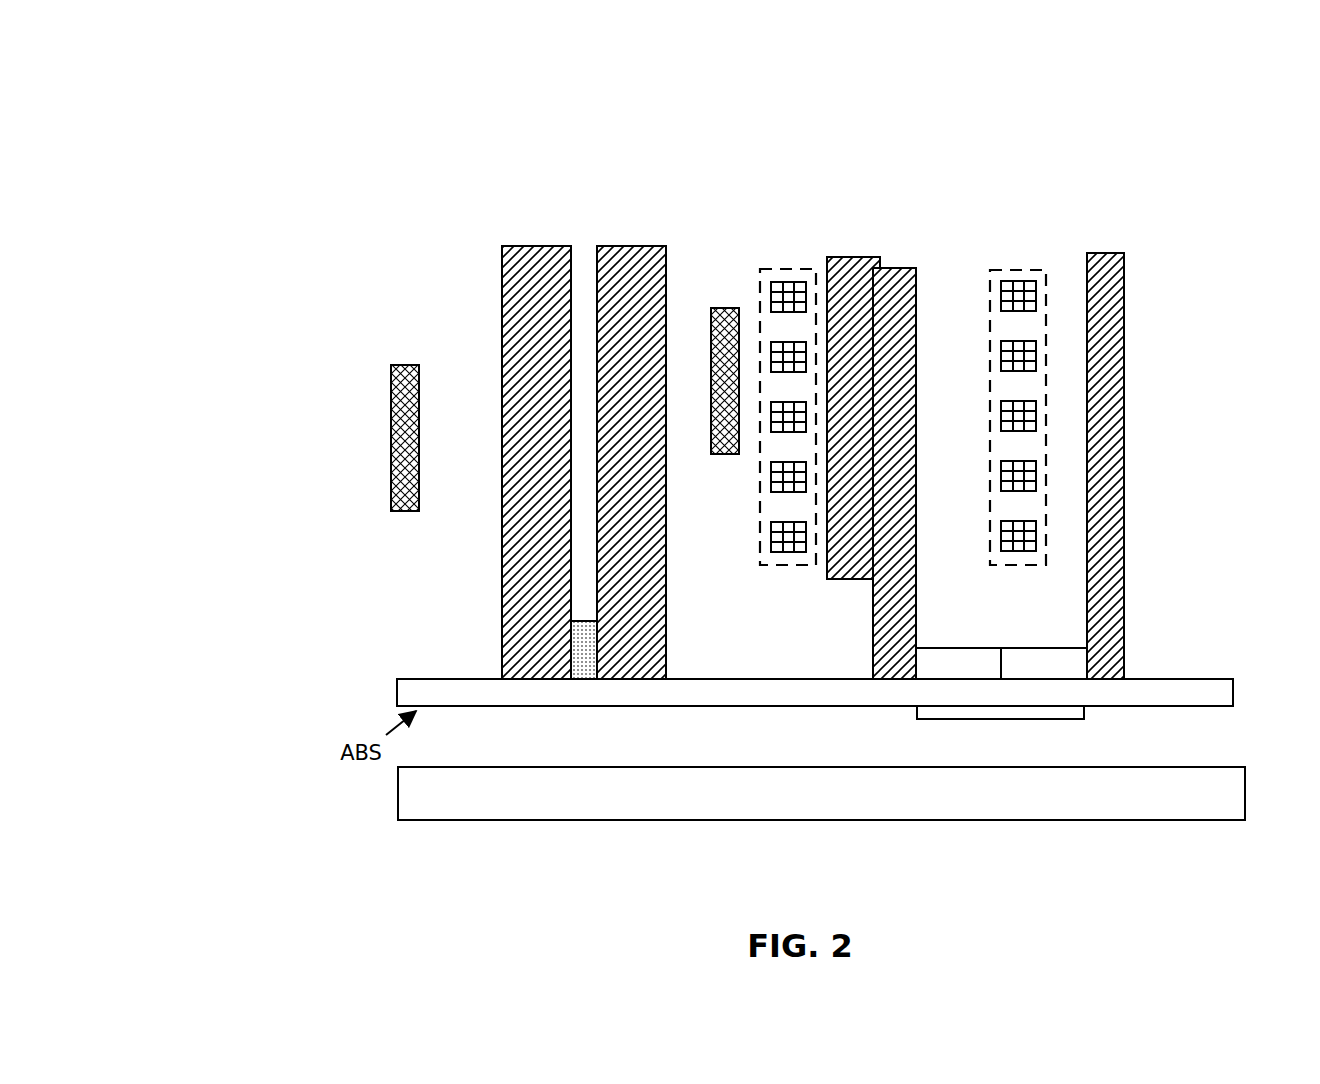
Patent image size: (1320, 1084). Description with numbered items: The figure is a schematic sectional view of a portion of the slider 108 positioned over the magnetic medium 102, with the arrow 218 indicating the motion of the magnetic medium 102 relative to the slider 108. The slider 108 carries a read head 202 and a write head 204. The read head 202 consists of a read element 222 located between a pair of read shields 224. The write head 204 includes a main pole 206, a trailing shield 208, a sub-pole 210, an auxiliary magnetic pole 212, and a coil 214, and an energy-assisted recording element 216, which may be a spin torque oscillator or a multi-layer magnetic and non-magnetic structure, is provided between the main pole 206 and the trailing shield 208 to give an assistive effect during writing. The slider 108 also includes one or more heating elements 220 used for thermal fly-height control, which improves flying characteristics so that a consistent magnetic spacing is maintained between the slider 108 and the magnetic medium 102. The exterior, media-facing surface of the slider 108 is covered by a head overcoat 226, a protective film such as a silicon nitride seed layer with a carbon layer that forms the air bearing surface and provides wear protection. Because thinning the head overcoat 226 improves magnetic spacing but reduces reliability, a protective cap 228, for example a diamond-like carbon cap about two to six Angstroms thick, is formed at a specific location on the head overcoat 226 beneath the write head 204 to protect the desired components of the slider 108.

The magnetic medium 102 is at (1143, 768).
The slider 108 is at (258, 104).
The read head 202 is at (753, 186).
The write head 204 is at (798, 200).
The main pole 206 is at (893, 268).
The trailing shield 208 is at (1077, 667).
The sub-pole 210 is at (1124, 452).
The auxiliary magnetic pole 212 is at (853, 257).
The coil 214 is at (774, 565).
The energy-assisted recording element 216 is at (960, 646).
The arrow 218 is at (1040, 842).
The heating element 220 is at (392, 512).
The read element 222 is at (584, 670).
The read shields 224 is at (512, 246).
The head overcoat 226 is at (1153, 680).
The protective cap 228 is at (960, 720).